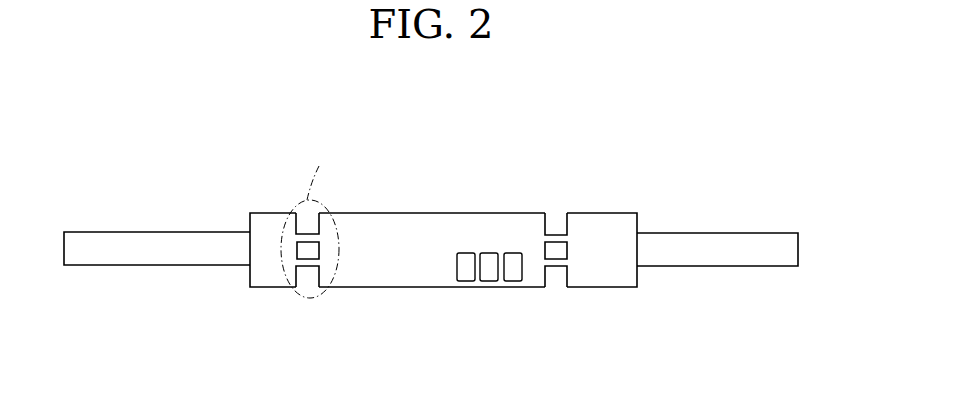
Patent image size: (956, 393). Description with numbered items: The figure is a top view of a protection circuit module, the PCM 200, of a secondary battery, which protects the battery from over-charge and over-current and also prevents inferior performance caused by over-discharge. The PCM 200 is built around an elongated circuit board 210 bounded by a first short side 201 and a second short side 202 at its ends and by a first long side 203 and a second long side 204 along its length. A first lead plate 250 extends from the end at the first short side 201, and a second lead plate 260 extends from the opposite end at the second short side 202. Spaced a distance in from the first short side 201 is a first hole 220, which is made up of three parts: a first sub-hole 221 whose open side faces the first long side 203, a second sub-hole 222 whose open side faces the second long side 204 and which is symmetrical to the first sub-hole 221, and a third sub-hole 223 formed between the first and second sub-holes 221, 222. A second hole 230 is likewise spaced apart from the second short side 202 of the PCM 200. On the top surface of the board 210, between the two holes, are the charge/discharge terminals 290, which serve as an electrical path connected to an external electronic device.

The protection circuit module 200 is at (73, 146).
The first lead plate 250 is at (142, 240).
The second lead plate 260 is at (712, 238).
The first short side 201 is at (253, 230).
The second short side 202 is at (638, 223).
The circuit board 210 is at (267, 222).
The first long side 203 is at (383, 213).
The second long side 204 is at (384, 287).
The first hole 220 is at (287, 287).
The first sub-hole 221 is at (304, 225).
The second sub-hole 222 is at (318, 300).
The third sub-hole 223 is at (305, 248).
The second hole 230 is at (557, 224).
The charge/discharge terminals 290 is at (466, 276).